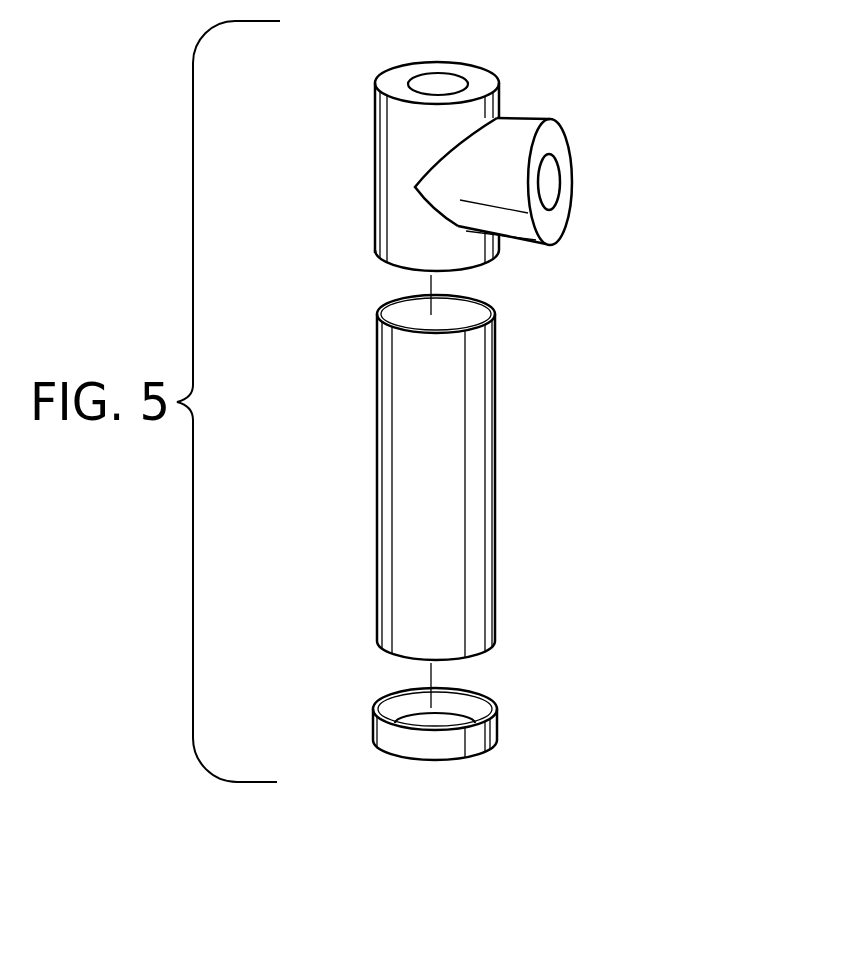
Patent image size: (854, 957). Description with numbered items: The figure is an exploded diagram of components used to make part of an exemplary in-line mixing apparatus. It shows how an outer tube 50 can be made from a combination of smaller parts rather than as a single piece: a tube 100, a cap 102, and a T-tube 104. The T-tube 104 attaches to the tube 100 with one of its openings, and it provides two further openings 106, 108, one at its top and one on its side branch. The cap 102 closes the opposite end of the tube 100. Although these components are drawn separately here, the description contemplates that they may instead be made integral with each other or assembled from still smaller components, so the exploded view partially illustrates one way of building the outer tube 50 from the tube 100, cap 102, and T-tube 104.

The outer tube 50 is at (584, 537).
The tube 100 is at (495, 392).
The cap 102 is at (497, 723).
The T-tube 104 is at (374, 218).
The opening 106 is at (484, 66).
The opening 108 is at (571, 136).